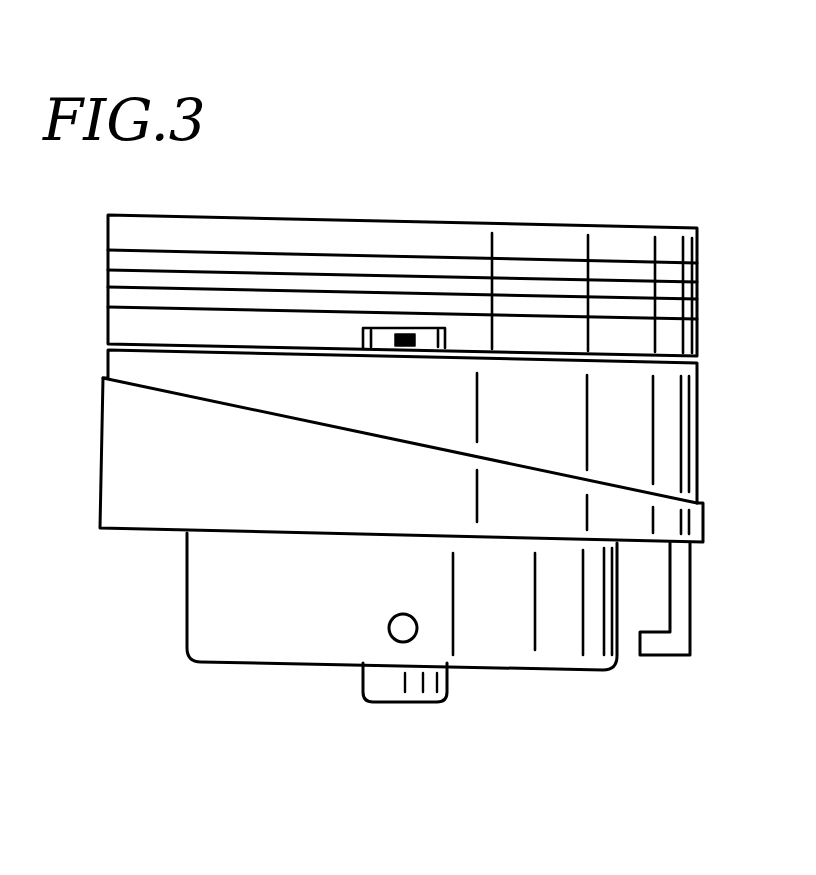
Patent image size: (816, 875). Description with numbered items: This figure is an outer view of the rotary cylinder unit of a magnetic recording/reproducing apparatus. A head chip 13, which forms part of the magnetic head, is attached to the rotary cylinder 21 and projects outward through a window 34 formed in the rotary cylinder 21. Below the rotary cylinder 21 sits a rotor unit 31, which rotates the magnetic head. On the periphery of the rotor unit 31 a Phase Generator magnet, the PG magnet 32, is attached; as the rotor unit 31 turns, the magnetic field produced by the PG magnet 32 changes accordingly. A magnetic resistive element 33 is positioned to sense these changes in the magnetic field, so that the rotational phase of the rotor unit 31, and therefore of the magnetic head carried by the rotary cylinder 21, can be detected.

The head chip 13 is at (404, 330).
The rotary cylinder 21 is at (628, 235).
The rotor unit 31 is at (267, 607).
The PG magnet 32 is at (390, 638).
The magnetic resistive element 33 is at (682, 635).
The window 34 is at (398, 330).